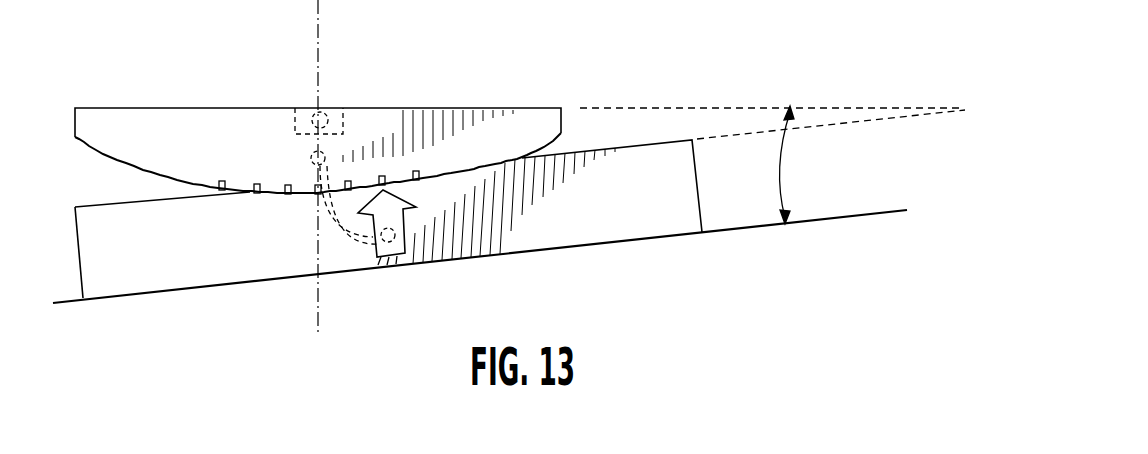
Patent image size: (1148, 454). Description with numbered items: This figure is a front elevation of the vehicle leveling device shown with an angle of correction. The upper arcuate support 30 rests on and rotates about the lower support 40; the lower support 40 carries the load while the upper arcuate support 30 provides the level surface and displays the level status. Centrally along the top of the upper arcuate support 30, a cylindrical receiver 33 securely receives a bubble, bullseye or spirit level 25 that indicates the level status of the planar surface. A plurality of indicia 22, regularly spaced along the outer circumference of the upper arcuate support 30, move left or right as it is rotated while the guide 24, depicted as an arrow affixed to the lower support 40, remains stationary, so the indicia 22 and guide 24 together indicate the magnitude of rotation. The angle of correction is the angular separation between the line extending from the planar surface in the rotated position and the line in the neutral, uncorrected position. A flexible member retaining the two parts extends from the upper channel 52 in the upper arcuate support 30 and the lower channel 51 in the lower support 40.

The upper arcuate support 30 is at (112, 128).
The lower support 40 is at (126, 275).
The indicia 22 is at (288, 193).
The level 25 is at (316, 108).
The cylindrical receiver 33 is at (343, 108).
The upper channel 52 is at (317, 152).
The lower channel 51 is at (387, 250).
The guide 24 is at (394, 266).